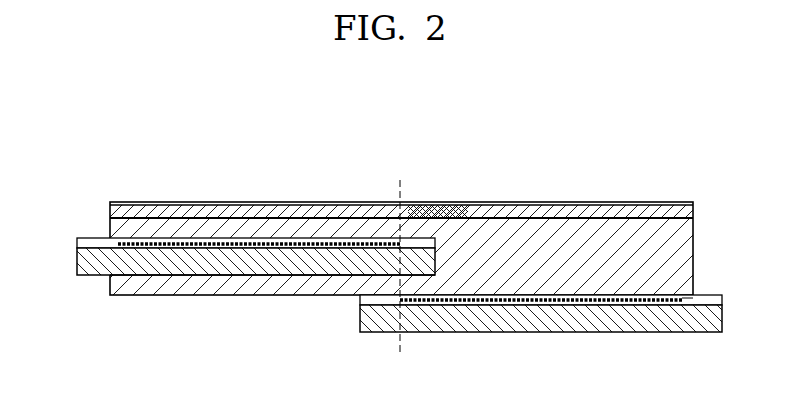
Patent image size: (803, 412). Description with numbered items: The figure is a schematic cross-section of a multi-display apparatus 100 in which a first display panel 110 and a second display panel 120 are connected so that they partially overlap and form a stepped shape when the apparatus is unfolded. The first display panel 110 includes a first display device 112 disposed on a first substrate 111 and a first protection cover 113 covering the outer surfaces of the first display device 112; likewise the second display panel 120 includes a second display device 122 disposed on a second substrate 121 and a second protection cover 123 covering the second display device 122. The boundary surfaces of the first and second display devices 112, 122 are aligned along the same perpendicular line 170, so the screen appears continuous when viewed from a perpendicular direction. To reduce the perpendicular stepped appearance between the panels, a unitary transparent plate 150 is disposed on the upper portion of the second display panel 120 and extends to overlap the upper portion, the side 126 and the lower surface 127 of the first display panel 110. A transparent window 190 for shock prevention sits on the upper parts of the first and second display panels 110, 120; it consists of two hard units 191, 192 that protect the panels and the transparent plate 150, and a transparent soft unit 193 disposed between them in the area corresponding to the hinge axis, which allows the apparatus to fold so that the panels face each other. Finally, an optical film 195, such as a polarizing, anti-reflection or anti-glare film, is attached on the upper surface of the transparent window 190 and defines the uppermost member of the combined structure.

The multi-display apparatus 100 is at (80, 159).
The first display panel 110 is at (88, 285).
The first substrate 111 is at (77, 263).
The first display device 112 is at (146, 236).
The first protection cover 113 is at (77, 241).
The second display panel 120 is at (664, 342).
The second substrate 121 is at (722, 320).
The second display device 122 is at (688, 291).
The second protection cover 123 is at (722, 296).
The side 126 is at (436, 255).
The lower surface 127 is at (275, 276).
The transparent plate 150 is at (688, 233).
The perpendicular line 170 is at (400, 281).
The transparent window 190 is at (560, 147).
The hard unit 191 is at (314, 210).
The hard unit 192 is at (562, 210).
The transparent soft unit 193 is at (433, 210).
The optical film 195 is at (688, 203).